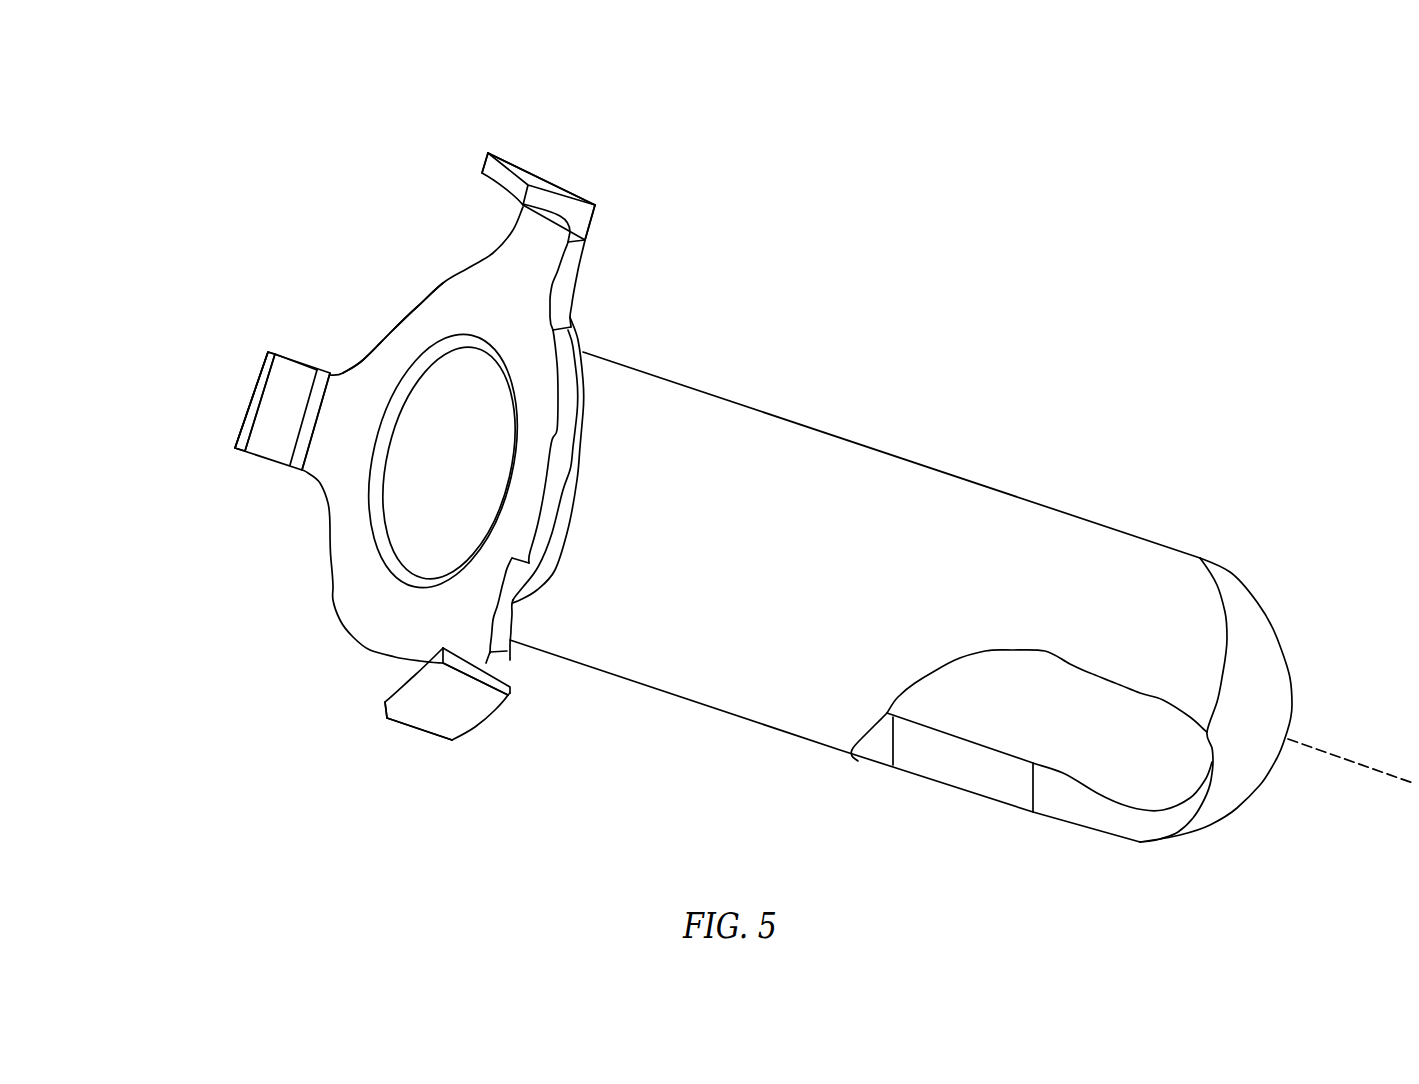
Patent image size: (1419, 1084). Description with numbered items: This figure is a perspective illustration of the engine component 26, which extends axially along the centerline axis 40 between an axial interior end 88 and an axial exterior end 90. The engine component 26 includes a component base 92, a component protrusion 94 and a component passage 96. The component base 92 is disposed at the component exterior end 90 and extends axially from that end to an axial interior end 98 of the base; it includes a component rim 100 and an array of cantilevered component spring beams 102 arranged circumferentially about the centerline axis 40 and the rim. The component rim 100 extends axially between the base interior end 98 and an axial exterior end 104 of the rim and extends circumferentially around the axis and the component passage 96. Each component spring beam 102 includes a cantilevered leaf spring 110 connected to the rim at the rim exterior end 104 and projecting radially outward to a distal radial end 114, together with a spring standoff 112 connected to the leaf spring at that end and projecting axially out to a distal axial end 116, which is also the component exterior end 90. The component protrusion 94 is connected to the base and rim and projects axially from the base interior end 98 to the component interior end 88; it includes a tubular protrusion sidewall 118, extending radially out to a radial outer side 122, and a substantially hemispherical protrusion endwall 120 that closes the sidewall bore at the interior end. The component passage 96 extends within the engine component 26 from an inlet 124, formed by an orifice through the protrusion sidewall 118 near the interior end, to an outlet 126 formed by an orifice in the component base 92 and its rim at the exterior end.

The engine component 26 is at (961, 563).
The centerline axis 40 is at (1397, 780).
The axial interior end 88 is at (1287, 727).
The axial exterior end 90 is at (247, 418).
The component base 92 is at (397, 443).
The component protrusion 94 is at (855, 577).
The component passage 96 is at (412, 493).
The axial interior end of component base 98 is at (555, 537).
The component rim 100 is at (432, 283).
The component spring beams 102 is at (525, 158).
The axial exterior end of component rim 104 is at (412, 337).
The cantilevered leaf spring 110 is at (590, 275).
The spring standoff 112 is at (560, 178).
The distal radial end 114 is at (600, 188).
The distal axial end 116 is at (496, 168).
The tubular protrusion sidewall 118 is at (718, 708).
The protrusion endwall 120 is at (1264, 700).
The radial outer side 122 is at (977, 754).
The inlet 124 is at (972, 770).
The outlet 126 is at (405, 566).